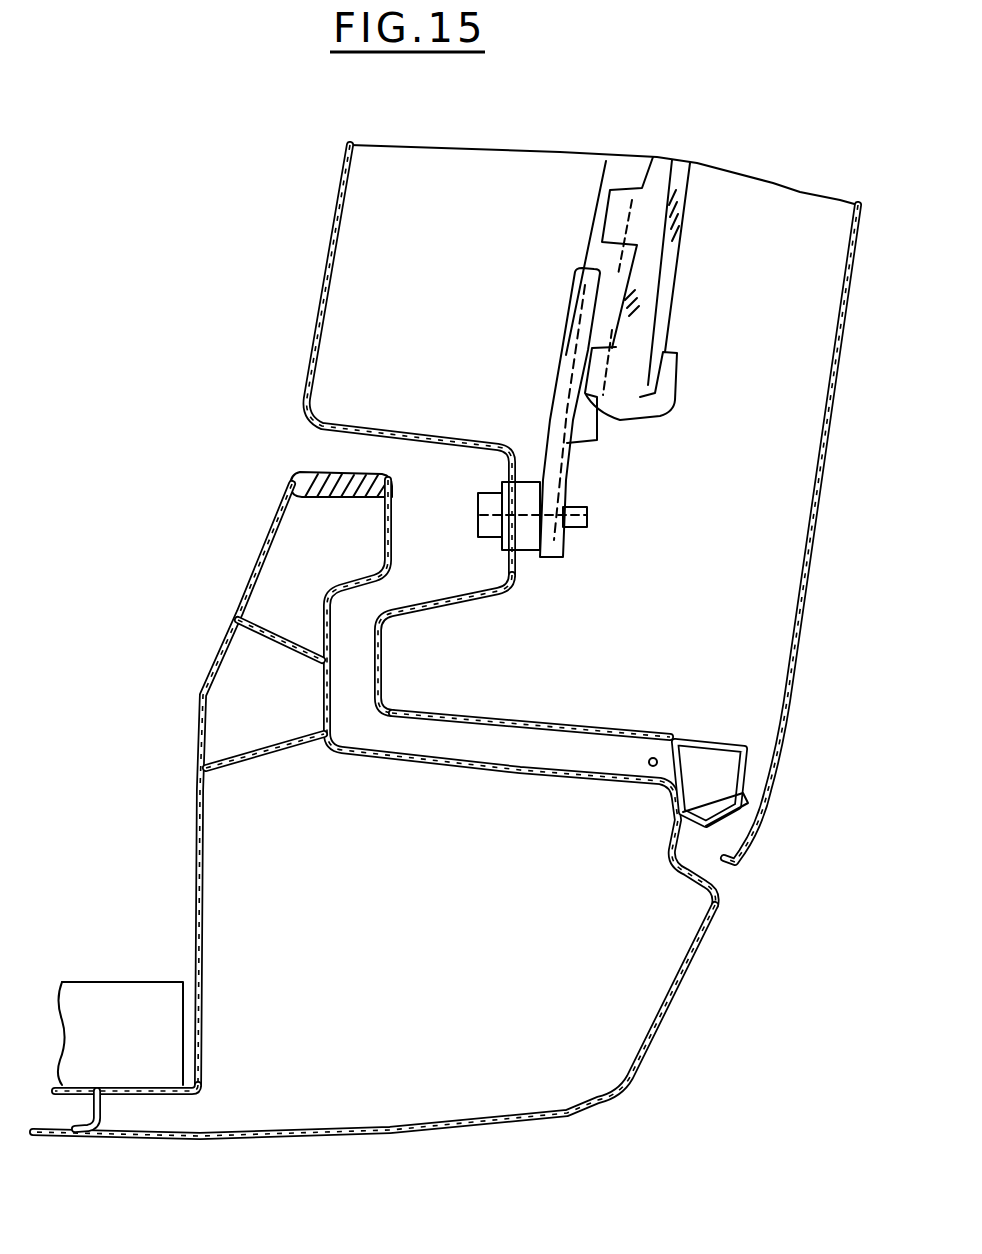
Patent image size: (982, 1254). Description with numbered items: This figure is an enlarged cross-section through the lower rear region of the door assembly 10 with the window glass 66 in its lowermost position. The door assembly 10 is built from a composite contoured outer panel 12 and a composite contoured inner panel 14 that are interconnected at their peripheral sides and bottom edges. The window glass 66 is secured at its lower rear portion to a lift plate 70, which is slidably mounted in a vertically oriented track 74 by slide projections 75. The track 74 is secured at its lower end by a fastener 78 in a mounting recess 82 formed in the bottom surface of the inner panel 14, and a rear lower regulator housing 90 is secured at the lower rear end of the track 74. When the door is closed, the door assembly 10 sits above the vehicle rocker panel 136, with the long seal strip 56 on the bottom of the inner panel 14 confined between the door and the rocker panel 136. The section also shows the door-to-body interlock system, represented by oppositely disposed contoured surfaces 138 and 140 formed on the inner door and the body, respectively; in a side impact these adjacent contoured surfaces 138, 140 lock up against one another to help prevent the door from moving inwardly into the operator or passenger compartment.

The door assembly 10 is at (314, 243).
The composite contoured outer panel 12 is at (818, 503).
The composite contoured inner panel 14 is at (325, 293).
The long seal strip 56 is at (703, 830).
The window glass 66 is at (680, 258).
The lift plate 70 is at (672, 402).
The track 74 is at (597, 435).
The slide projections 75 is at (600, 368).
The fastener 78 is at (488, 532).
The mounting recess 82 is at (453, 597).
The rear lower regulator housing 90 is at (478, 407).
The vehicle rocker panel 136 is at (677, 1003).
The contoured surface 138 is at (387, 658).
The contoured surface 140 is at (360, 570).